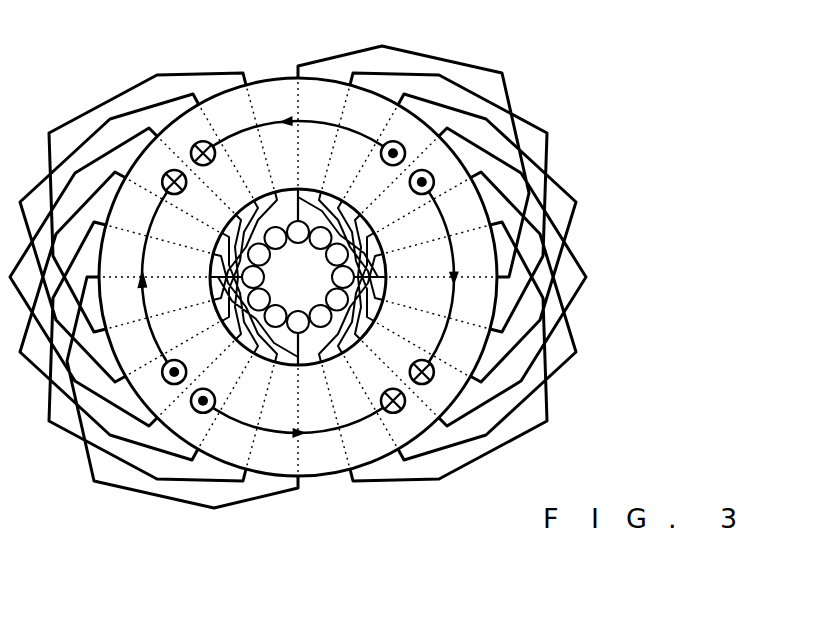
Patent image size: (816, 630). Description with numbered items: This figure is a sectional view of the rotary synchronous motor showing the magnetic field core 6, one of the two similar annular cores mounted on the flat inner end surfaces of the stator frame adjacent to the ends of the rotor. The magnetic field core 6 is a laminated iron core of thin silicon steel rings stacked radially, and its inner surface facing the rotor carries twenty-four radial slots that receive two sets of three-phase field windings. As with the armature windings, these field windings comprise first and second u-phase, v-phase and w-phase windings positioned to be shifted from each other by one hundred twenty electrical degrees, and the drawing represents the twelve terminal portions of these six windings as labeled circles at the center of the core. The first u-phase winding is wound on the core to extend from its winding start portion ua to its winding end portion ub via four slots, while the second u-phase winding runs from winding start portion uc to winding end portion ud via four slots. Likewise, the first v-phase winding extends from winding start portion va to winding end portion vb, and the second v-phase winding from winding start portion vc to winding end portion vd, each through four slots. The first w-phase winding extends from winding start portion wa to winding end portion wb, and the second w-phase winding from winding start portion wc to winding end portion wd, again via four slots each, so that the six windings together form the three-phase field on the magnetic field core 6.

The magnetic field core 6 is at (275, 99).
The winding start portion ua is at (298, 232).
The winding end portion ub is at (343, 277).
The winding start portion uc is at (298, 322).
The winding end portion ud is at (253, 277).
The winding start portion va is at (337, 255).
The winding end portion vb is at (321, 316).
The winding start portion vc is at (259, 300).
The winding end portion vd is at (276, 238).
The winding start portion wa is at (337, 300).
The winding end portion wb is at (321, 238).
The winding start portion wc is at (259, 255).
The winding end portion wd is at (276, 316).